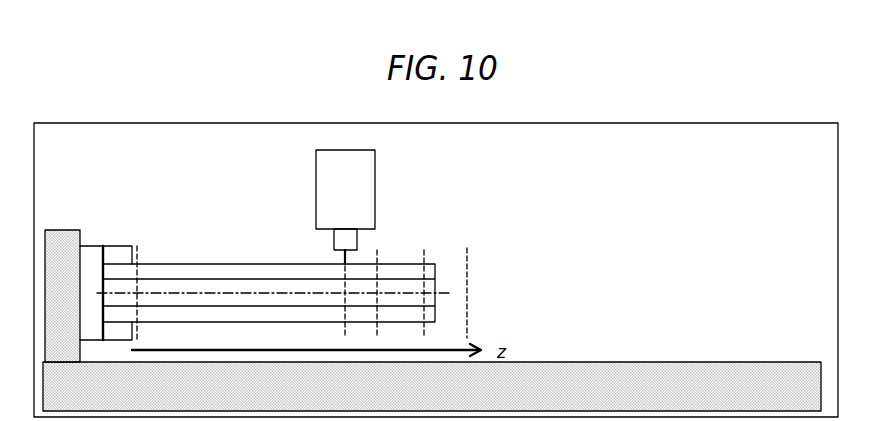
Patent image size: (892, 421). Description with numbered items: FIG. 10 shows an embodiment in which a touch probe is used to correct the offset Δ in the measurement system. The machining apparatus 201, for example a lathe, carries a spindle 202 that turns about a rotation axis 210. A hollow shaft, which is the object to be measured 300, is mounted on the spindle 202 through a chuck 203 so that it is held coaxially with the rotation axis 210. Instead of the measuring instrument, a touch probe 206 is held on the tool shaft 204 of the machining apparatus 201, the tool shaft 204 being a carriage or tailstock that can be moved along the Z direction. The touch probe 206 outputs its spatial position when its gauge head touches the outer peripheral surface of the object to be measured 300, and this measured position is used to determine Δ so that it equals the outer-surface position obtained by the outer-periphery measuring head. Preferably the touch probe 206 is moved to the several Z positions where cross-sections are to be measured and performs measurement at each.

The machining apparatus 201 is at (81, 138).
The spindle 202 is at (85, 253).
The chuck 203 is at (118, 252).
The tool shaft 204 is at (368, 178).
The touch probe 206 is at (350, 239).
The rotation axis 210 is at (183, 295).
The object to be measured 300 is at (155, 267).